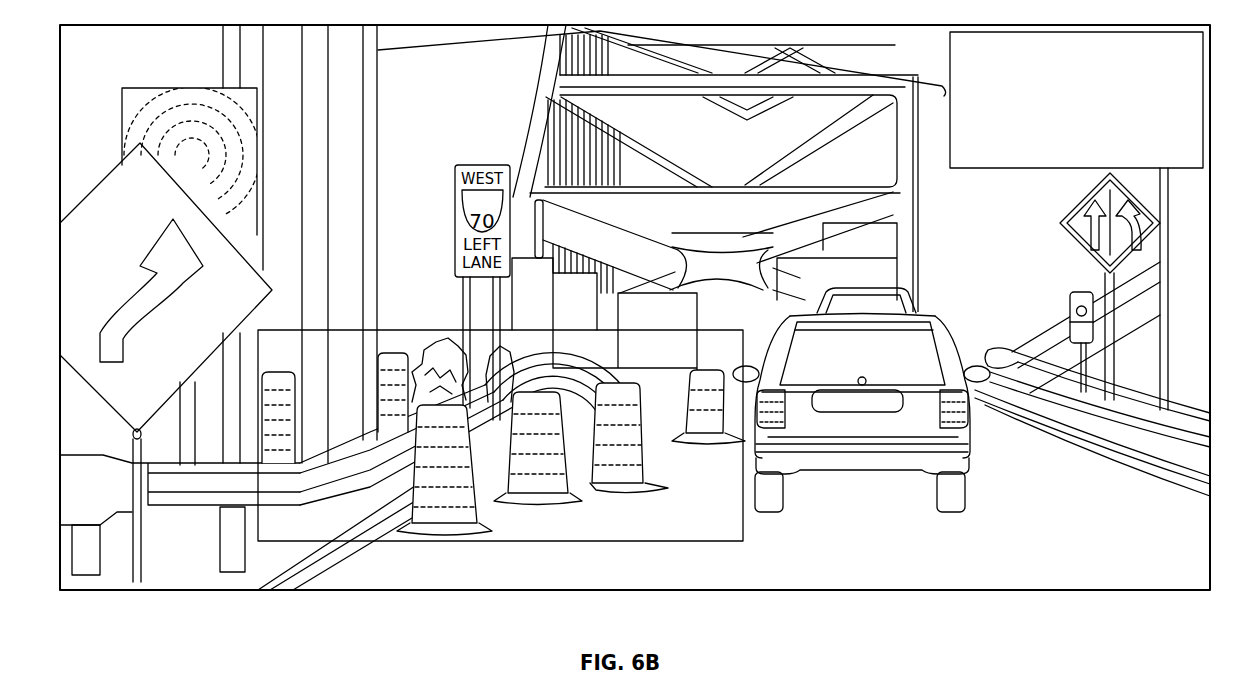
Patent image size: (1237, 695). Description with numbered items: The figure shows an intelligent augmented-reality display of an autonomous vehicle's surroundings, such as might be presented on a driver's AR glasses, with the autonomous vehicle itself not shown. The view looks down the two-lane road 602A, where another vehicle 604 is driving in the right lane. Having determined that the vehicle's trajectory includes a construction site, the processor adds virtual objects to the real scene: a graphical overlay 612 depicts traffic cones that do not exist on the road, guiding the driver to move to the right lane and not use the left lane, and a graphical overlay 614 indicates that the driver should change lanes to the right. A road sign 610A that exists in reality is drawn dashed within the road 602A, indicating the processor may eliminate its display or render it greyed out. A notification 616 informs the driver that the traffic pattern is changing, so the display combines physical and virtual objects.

The road 602A is at (911, 568).
The vehicle 604 is at (967, 442).
The sign 610A is at (162, 98).
The graphical overlay 612 is at (578, 543).
The graphical overlay 614 is at (143, 463).
The notification 616 is at (1190, 69).